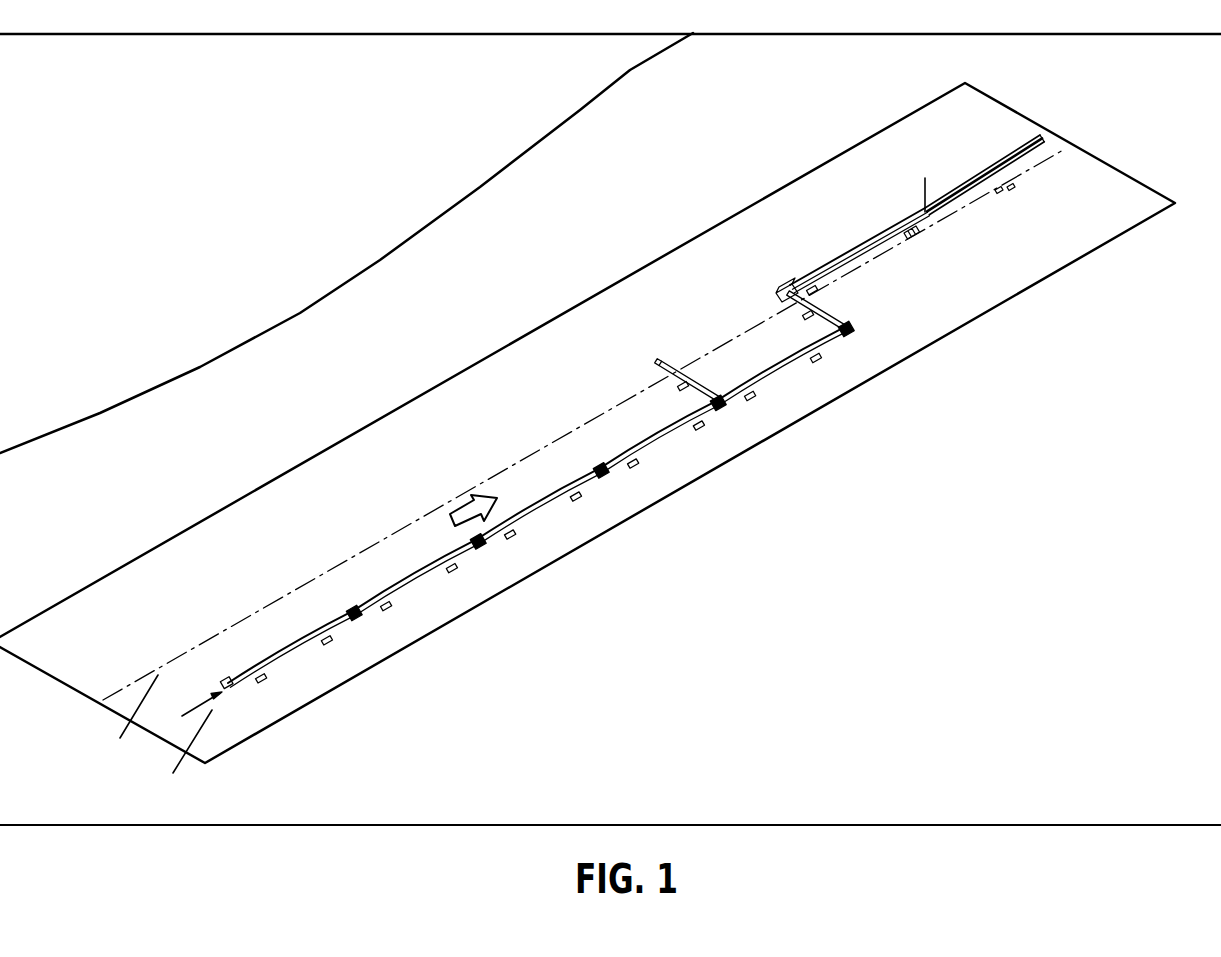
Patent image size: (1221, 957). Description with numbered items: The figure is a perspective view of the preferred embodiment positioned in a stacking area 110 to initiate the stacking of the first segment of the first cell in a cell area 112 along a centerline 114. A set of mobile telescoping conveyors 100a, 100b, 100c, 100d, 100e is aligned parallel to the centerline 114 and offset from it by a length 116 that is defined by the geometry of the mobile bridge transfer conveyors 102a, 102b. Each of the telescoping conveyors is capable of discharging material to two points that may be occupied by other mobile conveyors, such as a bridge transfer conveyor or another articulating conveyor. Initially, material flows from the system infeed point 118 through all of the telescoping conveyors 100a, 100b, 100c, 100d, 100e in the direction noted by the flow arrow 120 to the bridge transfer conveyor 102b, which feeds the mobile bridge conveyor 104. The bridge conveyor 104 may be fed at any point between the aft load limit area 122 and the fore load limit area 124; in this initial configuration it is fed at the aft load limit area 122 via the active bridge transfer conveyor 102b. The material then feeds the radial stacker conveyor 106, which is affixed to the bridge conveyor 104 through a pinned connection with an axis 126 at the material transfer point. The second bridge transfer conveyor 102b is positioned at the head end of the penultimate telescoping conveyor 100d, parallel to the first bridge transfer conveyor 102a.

The mobile telescoping conveyor 100a is at (280, 667).
The mobile telescoping conveyor 100b is at (405, 590).
The mobile telescoping conveyor 100c is at (533, 520).
The mobile telescoping conveyor 100d is at (660, 449).
The mobile telescoping conveyor 100e is at (781, 376).
The mobile bridge transfer conveyor 102a is at (698, 378).
The mobile bridge transfer conveyor 102b is at (832, 305).
The mobile bridge conveyor 104 is at (845, 253).
The radial stacker conveyor 106 is at (987, 164).
The stacking area 110 is at (325, 296).
The cell area 112 is at (677, 254).
The centerline 114 is at (318, 576).
The length 116 is at (183, 772).
The system infeed point 118 is at (190, 708).
The flow arrow 120 is at (462, 508).
The aft load limit area 122 is at (793, 285).
The fore load limit area 124 is at (903, 218).
The axis 126 is at (920, 190).